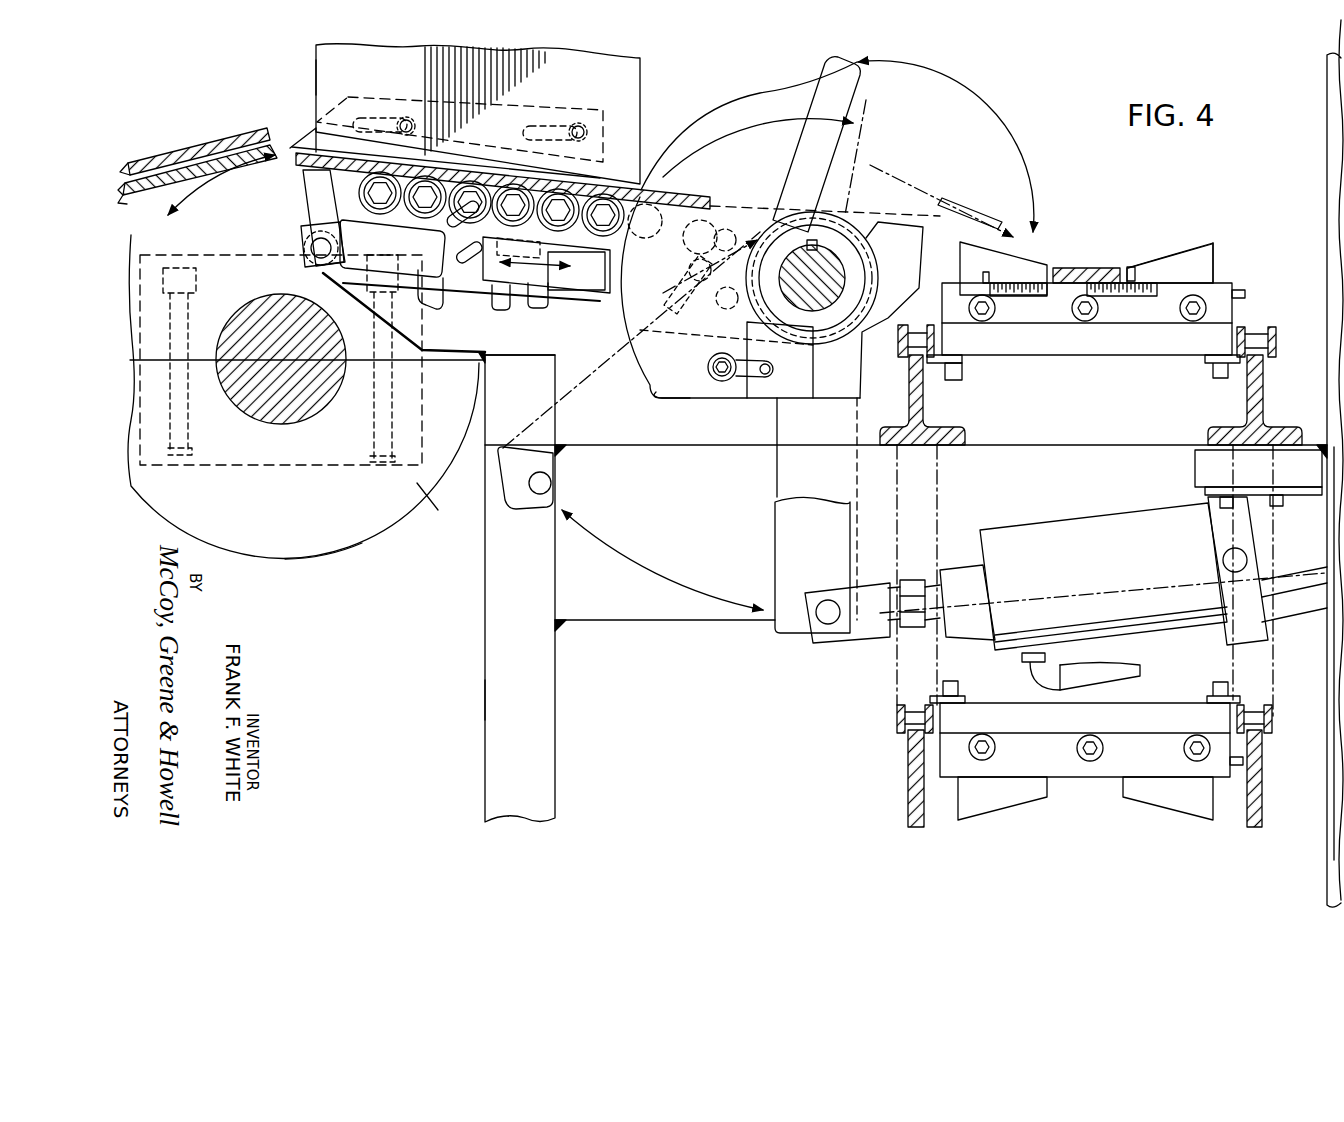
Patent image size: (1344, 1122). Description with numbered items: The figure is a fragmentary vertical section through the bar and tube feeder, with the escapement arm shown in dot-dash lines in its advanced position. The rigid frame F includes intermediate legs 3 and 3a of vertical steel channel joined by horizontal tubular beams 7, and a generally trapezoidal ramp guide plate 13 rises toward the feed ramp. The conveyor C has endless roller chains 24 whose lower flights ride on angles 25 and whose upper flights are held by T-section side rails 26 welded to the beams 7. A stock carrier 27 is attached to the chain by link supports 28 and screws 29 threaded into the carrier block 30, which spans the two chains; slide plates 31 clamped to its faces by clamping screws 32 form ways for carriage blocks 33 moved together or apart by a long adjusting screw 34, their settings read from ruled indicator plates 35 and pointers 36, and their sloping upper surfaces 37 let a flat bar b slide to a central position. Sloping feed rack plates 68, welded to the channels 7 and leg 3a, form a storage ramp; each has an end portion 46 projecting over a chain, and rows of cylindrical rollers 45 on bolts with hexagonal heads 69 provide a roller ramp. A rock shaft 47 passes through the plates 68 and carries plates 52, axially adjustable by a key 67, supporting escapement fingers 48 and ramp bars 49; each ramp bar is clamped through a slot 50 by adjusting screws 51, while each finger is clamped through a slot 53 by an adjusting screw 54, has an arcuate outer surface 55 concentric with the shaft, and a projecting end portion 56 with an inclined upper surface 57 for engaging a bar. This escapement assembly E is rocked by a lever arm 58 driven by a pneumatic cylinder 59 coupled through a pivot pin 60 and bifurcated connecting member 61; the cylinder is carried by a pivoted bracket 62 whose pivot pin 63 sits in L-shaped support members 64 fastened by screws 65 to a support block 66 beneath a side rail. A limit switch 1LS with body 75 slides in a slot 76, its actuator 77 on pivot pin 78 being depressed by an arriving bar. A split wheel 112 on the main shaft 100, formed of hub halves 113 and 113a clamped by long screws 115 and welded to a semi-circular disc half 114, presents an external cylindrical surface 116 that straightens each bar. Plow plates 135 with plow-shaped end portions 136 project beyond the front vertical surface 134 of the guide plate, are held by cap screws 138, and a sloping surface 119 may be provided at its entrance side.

The intermediate leg 3 is at (1327, 782).
The intermediate leg 3a is at (545, 748).
The horizontal tubular beam 7 is at (672, 621).
The ramp guide plate 13 is at (634, 66).
The endless roller chains 24 is at (900, 358).
The angles 25 is at (913, 812).
The side rails 26 is at (920, 405).
The adjustable stock carrier 27 is at (1053, 253).
The link supports 28 is at (952, 355).
The screws 29 is at (960, 374).
The carrier block 30 is at (1090, 355).
The slide plates 31 is at (1137, 316).
The clamping screws 32 is at (1083, 318).
The carriage blocks 33 is at (963, 248).
The adjusting screw 34 is at (1245, 294).
The ruled indicator plates 35 is at (1007, 294).
The pointers 36 is at (990, 272).
The sloping upper surfaces 37 is at (1182, 247).
The cylindrical rollers 45 is at (590, 190).
The end portion 46 is at (893, 225).
The rock shaft 47 is at (827, 262).
The escapement fingers 48 is at (677, 391).
The ramp bars 49 is at (790, 185).
The elongated slot 50 is at (680, 300).
The adjusting screws 51 is at (683, 254).
The plates 52 is at (837, 398).
The elongated slot 53 is at (768, 370).
The adjusting screw 54 is at (722, 382).
The arcuate outer surface 55 is at (632, 343).
The projecting end portion 56 is at (642, 196).
The inclined upper surface 57 is at (697, 142).
The lever arm 58 is at (603, 468).
The pneumatic cylinder 59 is at (1040, 528).
The pivot pin 60 is at (826, 600).
The bifurcated connecting member 61 is at (866, 636).
The pivoted bracket 62 is at (1255, 637).
The pivot pin 63 is at (1222, 563).
The L-shaped support members 64 is at (1262, 537).
The screws 65 is at (1277, 507).
The support block 66 is at (1198, 462).
The key 67 is at (817, 242).
The feed rack plates 68 is at (452, 345).
The hexagonal heads 69 is at (425, 213).
The switch body 75 is at (446, 292).
The slot 76 is at (500, 293).
The actuator 77 is at (322, 213).
The pivot pin 78 is at (310, 248).
The main shaft 100 is at (277, 410).
The split circular wheel 112 is at (303, 396).
The hub half 113 is at (292, 465).
The hub half 113a is at (213, 250).
The disc half 114 is at (487, 364).
The long screws 115 is at (180, 262).
The external cylindrical surface 116 is at (360, 545).
The sloping surface 119 is at (335, 146).
The front vertical surface 134 is at (313, 75).
The plow plate 135 is at (381, 96).
The plow-shaped end portion 136 is at (308, 138).
The cap screws 138 is at (405, 118).
The limit switch 1LS is at (324, 272).
The flat bars b is at (212, 142).
The conveyor C is at (1227, 242).
The escapement assembly E is at (900, 132).
The rigid frame F is at (482, 698).